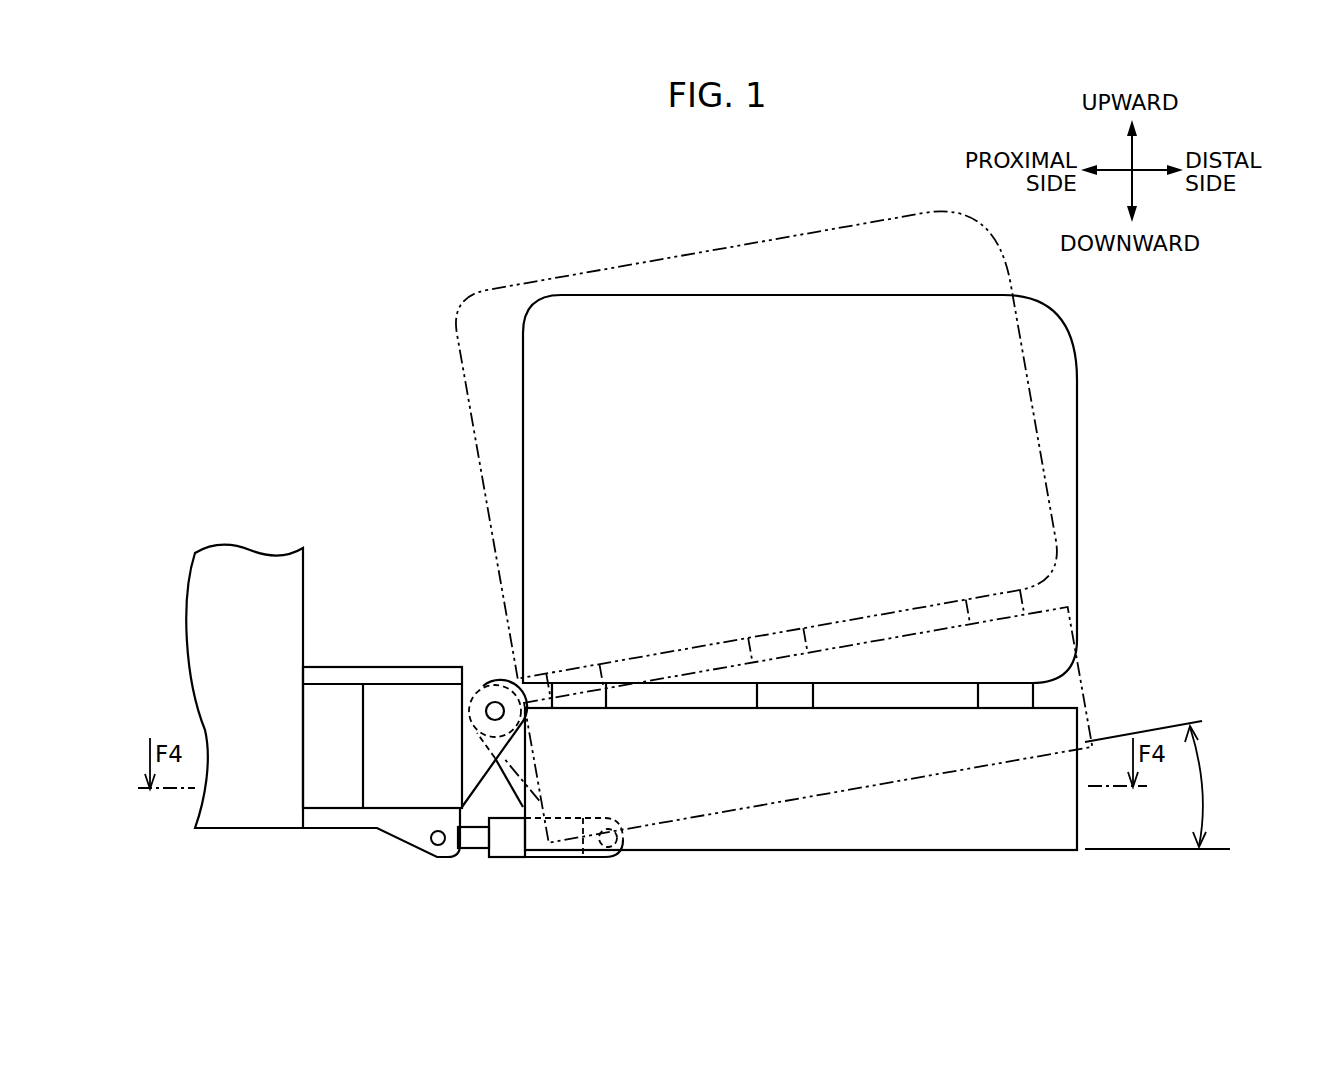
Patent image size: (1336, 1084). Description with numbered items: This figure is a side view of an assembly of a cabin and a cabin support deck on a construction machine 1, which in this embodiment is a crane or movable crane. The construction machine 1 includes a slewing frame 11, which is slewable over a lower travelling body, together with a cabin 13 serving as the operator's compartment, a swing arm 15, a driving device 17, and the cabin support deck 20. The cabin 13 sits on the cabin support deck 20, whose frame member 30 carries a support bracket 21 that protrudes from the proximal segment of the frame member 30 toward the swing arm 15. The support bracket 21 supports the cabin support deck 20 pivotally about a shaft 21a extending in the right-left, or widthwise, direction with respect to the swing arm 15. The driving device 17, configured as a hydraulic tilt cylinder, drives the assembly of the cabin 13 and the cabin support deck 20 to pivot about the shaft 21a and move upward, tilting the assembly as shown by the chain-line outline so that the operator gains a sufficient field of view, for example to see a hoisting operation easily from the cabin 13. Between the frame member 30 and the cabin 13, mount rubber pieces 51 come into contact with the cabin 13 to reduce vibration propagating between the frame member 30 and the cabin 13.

The construction machine 1 is at (248, 271).
The slewing frame 11 is at (246, 812).
The cabin 13 is at (1078, 510).
The swing arm 15 is at (410, 700).
The driving device 17 is at (505, 854).
The cabin support deck 20 is at (1062, 849).
The support bracket 21 is at (488, 690).
The shaft 21a is at (494, 702).
The frame member 30 is at (748, 851).
The mount rubber piece 51 is at (580, 700).